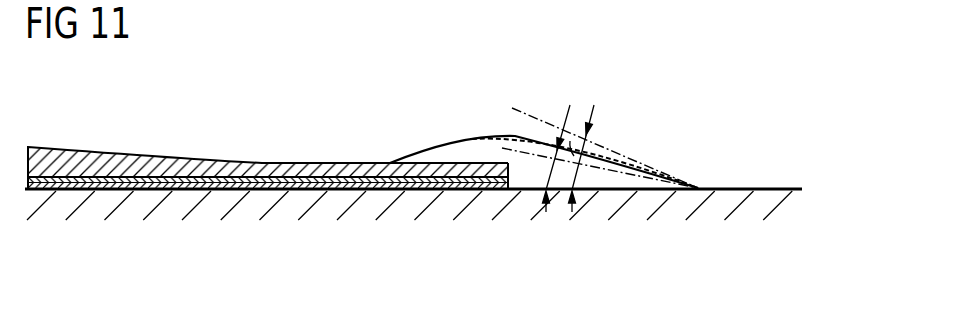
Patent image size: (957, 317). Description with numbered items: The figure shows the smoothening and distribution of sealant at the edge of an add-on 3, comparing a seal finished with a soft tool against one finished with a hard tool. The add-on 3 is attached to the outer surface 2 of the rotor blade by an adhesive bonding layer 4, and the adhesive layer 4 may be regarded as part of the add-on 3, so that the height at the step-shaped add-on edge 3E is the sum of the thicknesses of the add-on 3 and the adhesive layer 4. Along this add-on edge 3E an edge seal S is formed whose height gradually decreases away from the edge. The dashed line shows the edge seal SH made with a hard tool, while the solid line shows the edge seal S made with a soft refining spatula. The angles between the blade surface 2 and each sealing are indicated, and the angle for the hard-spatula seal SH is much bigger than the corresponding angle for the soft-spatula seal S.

The outer surface 2 is at (773, 188).
The add-on 3 is at (239, 160).
The add-on edge 3E is at (508, 191).
The adhesive bonding layer 4 is at (97, 181).
The edge seal S is at (466, 155).
The edge seal made with a hard tool SH is at (633, 162).